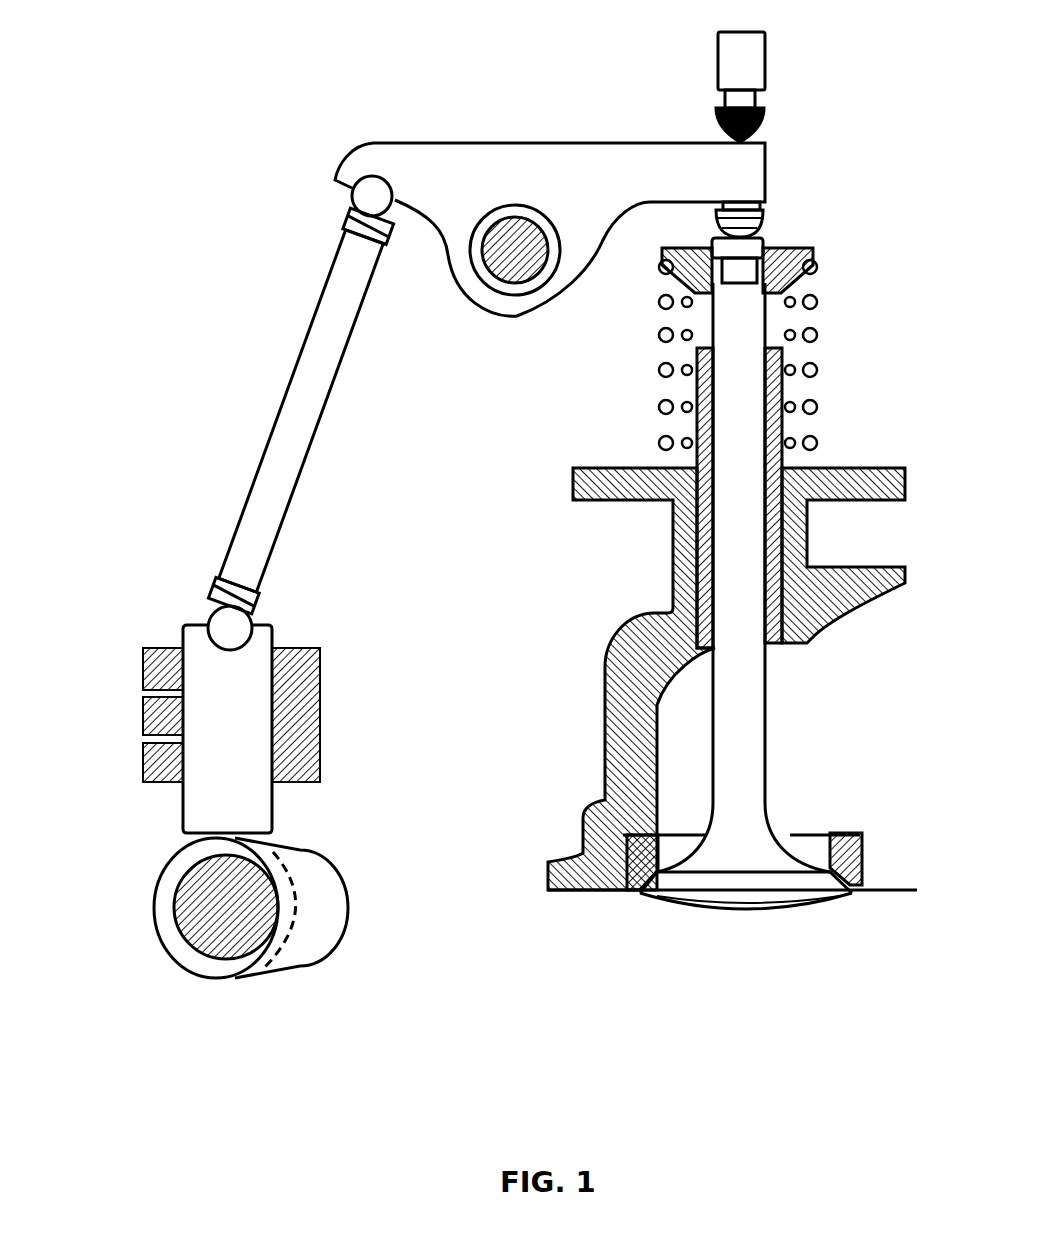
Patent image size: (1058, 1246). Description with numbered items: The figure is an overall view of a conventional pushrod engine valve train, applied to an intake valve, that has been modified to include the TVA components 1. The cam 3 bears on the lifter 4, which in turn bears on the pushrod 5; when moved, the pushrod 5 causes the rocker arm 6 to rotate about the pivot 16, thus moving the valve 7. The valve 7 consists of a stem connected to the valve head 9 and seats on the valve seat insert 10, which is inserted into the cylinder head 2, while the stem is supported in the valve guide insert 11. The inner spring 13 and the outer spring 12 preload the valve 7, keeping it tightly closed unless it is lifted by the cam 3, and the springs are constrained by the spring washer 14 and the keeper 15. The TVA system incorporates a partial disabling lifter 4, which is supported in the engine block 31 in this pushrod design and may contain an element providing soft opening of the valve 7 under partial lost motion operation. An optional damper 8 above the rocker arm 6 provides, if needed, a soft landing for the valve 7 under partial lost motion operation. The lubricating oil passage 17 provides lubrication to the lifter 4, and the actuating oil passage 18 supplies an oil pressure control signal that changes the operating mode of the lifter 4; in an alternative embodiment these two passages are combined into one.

The TVA components 1 is at (256, 146).
The cylinder head 2 is at (605, 770).
The cam 3 is at (345, 920).
The lifter 4 is at (273, 797).
The pushrod 5 is at (340, 328).
The rocker arm 6 is at (525, 143).
The valve 7 is at (790, 705).
The damper 8 is at (718, 48).
The valve head 9 is at (660, 900).
The valve seat insert 10 is at (890, 782).
The valve guide insert 11 is at (697, 560).
The outer spring 12 is at (813, 332).
The inner spring 13 is at (790, 438).
The spring washer 14 is at (813, 248).
The keeper 15 is at (767, 260).
The pivot 16 is at (507, 273).
The lubricating oil passage 17 is at (145, 694).
The actuating oil passage 18 is at (145, 742).
The engine block 31 is at (153, 647).